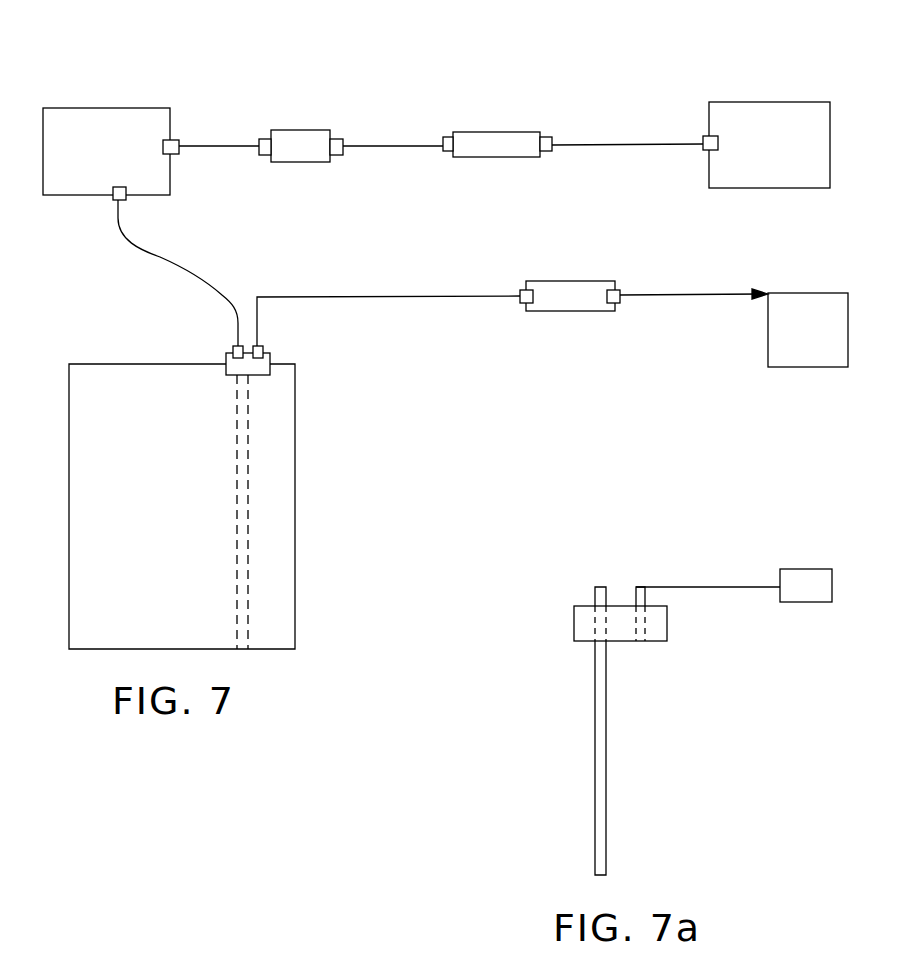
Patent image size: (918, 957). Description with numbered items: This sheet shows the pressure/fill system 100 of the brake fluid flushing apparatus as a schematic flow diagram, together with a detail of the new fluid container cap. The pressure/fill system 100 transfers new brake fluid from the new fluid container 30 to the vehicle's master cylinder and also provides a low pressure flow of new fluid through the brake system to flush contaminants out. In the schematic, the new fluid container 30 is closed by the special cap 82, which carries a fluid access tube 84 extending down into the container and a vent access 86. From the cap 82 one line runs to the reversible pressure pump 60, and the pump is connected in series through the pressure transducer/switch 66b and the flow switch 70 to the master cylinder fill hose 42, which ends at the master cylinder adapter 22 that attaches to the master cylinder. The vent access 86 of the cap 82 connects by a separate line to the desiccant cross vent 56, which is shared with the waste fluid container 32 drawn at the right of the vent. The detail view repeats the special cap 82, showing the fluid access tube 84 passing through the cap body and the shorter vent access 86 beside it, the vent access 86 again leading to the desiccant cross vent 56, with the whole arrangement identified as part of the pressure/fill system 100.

In FIG. 7, the master cylinder adapter 22 is at (778, 102).
In FIG. 7, the new fluid container 30 is at (69, 537).
In FIG. 7, the waste fluid container 32 is at (792, 293).
In FIG. 7, the master cylinder fill hose 42 is at (603, 143).
In FIG. 7, the desiccant cross vent 56 is at (571, 311).
In FIG. 7a, the desiccant cross vent 56 is at (808, 602).
In FIG. 7, the reversible pressure pump 60 is at (99, 108).
In FIG. 7, the pressure transducer/switch 66b is at (308, 130).
In FIG. 7, the flow switch 70 is at (484, 132).
In FIG. 7, the special cap 82 is at (270, 359).
In FIG. 7a, the special cap 82 is at (574, 622).
In FIG. 7, the fluid access tube 84 is at (248, 548).
In FIG. 7a, the fluid access tube 84 is at (594, 715).
In FIG. 7a, the vent access 86 is at (645, 643).
In FIG. 7a, the pressure/fill system 100 is at (478, 796).